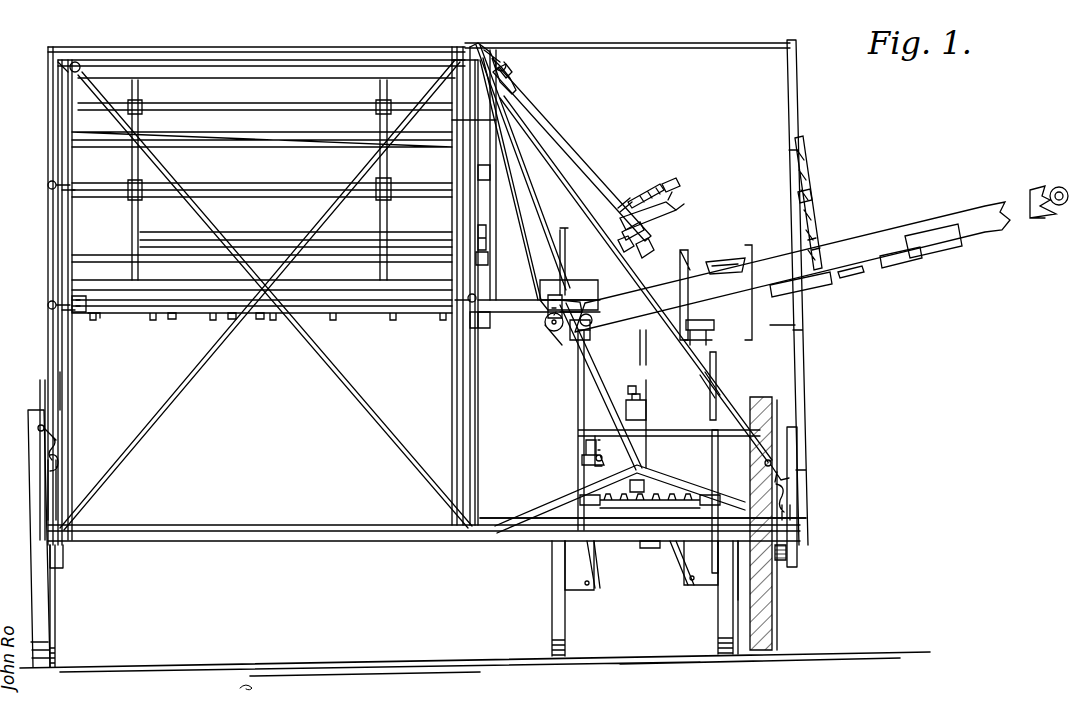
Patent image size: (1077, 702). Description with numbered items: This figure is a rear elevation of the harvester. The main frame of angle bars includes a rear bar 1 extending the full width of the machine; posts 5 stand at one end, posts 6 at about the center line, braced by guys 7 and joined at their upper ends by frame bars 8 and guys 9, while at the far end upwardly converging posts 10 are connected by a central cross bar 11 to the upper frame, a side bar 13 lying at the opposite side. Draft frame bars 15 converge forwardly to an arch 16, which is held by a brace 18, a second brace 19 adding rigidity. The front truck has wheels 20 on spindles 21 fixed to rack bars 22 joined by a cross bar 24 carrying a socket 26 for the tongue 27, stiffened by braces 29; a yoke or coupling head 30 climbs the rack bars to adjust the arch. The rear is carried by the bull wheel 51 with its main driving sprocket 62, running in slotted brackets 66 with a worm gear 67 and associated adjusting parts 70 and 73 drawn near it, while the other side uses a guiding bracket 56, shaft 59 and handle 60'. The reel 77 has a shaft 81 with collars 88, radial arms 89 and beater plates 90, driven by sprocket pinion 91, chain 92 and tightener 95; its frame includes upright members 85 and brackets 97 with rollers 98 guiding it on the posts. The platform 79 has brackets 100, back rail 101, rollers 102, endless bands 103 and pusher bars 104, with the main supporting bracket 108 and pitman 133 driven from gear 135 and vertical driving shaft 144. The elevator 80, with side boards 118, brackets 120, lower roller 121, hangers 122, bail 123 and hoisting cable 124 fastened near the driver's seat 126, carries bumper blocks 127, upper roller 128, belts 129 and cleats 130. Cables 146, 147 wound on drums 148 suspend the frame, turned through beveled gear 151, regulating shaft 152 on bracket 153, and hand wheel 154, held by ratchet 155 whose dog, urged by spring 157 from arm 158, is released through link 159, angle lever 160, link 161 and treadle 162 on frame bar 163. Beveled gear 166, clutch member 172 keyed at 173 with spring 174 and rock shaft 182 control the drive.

The rear bar 1 is at (400, 533).
The posts 5 is at (66, 500).
The posts 6 is at (42, 391).
The guys 7 is at (176, 398).
The frame bars 8 is at (352, 52).
The guys 9 is at (258, 50).
The posts 10 is at (806, 372).
The central cross bar 11 is at (690, 46).
The bar 13 is at (686, 180).
The draft frame bars 15 is at (650, 466).
The arch 16 is at (646, 428).
The brace 18 is at (508, 192).
The brace 19 is at (520, 143).
The wheels 20 is at (568, 632).
The spindles 21 is at (582, 582).
The rack bars 22 is at (602, 550).
The bridge piece or cross bar 24 is at (592, 430).
The socket or bracket 26 is at (646, 398).
The tongue or pole 27 is at (640, 396).
The braces 29 is at (600, 562).
The yoke or coupling head 30 is at (580, 460).
The driving or bull wheel 51 is at (774, 614).
The guiding bracket 56 is at (64, 572).
The shaft 59 is at (60, 462).
The crank or handle 60' is at (71, 435).
The main driving sprocket 62 is at (52, 600).
The slotted brackets 66 is at (714, 430).
The worm gear 67 is at (798, 548).
The link 70 is at (792, 500).
The pivot 73 is at (790, 470).
The reel 77 is at (276, 150).
The platform 79 is at (262, 310).
The elevator 80 is at (954, 189).
The reel shaft 81 is at (232, 160).
The upright members 85 is at (74, 266).
The collars or hub members 88 is at (130, 176).
The radial arms 89 is at (380, 212).
The blades or beater plates 90 is at (255, 100).
The sprocket pinion 91 is at (480, 172).
The sprocket chain 92 is at (488, 236).
The chain tightener or idle sprocket 95 is at (488, 260).
The brackets 97 is at (50, 192).
The rollers 98 is at (46, 183).
The brackets 100 is at (80, 316).
The back rail 101 is at (233, 320).
The rollers 102 is at (112, 318).
The endless bands 103 is at (172, 320).
The cleats or pusher bars 104 is at (260, 320).
The casting or main supporting bracket 108 is at (490, 324).
The side boards or wings 118 is at (894, 228).
The brackets 120 is at (594, 338).
The roller or drum 121 is at (552, 336).
The brackets or hangers 122 is at (818, 238).
The bail 123 is at (808, 170).
The hoisting cable 124 is at (800, 198).
The driver's seat 126 is at (730, 260).
The bumper blocks 127 is at (960, 240).
The roller 128 is at (1050, 210).
The endless belts or bands 129 is at (900, 262).
The cleats or cross bars 130 is at (856, 270).
The pitman 133 is at (486, 330).
The gear 135 is at (565, 302).
The vertical driving shaft 144 is at (578, 400).
The cable 146 is at (66, 126).
The cable 147 is at (458, 128).
The drums 148 is at (500, 55).
The beveled gear 151 is at (514, 78).
The regulating shaft 152 is at (588, 170).
The bracket and bracing member 153 is at (576, 230).
The hand wheel 154 is at (676, 214).
The ratchet 155 is at (642, 236).
The spring 157 is at (668, 190).
The arm 158 is at (678, 190).
The link 159 is at (632, 250).
The angle lever 160 is at (624, 206).
The link 161 is at (650, 256).
The treadle 162 is at (700, 340).
The frame bar 163 is at (690, 250).
The beveled gear 166 is at (548, 538).
The clutch member 172 is at (718, 569).
The key 173 is at (676, 536).
The spring 174 is at (640, 510).
The rock shaft 182 is at (712, 386).